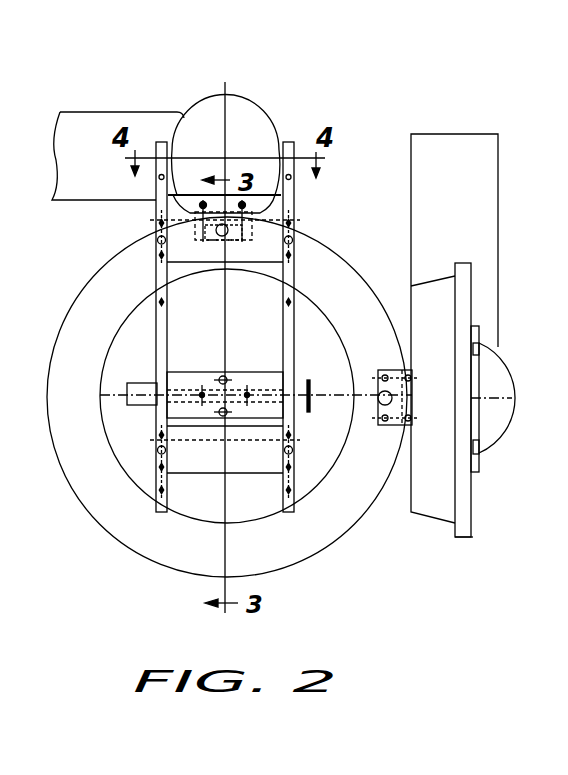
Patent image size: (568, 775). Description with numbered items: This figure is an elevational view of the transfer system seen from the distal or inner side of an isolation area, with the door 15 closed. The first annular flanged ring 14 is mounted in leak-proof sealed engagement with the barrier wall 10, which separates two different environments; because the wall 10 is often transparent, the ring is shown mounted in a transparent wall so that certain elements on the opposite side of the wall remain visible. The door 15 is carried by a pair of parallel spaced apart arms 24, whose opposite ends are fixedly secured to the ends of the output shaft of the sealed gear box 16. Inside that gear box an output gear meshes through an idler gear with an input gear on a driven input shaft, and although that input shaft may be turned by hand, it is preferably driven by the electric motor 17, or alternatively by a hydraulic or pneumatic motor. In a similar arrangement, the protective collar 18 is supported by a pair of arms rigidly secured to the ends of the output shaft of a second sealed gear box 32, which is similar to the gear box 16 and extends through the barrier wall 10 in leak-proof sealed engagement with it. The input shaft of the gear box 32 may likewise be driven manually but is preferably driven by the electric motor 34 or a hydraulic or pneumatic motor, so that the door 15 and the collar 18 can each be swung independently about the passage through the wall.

The barrier wall 10 is at (405, 609).
The first annular flanged ring 14 is at (165, 567).
The door 15 is at (130, 445).
The sealed gear box 16 is at (262, 102).
The electric motor 17 is at (110, 112).
The protective collar 18 is at (420, 522).
The arms 24 is at (155, 330).
The sealed gear box 32 is at (512, 427).
The electric motor 34 is at (498, 172).